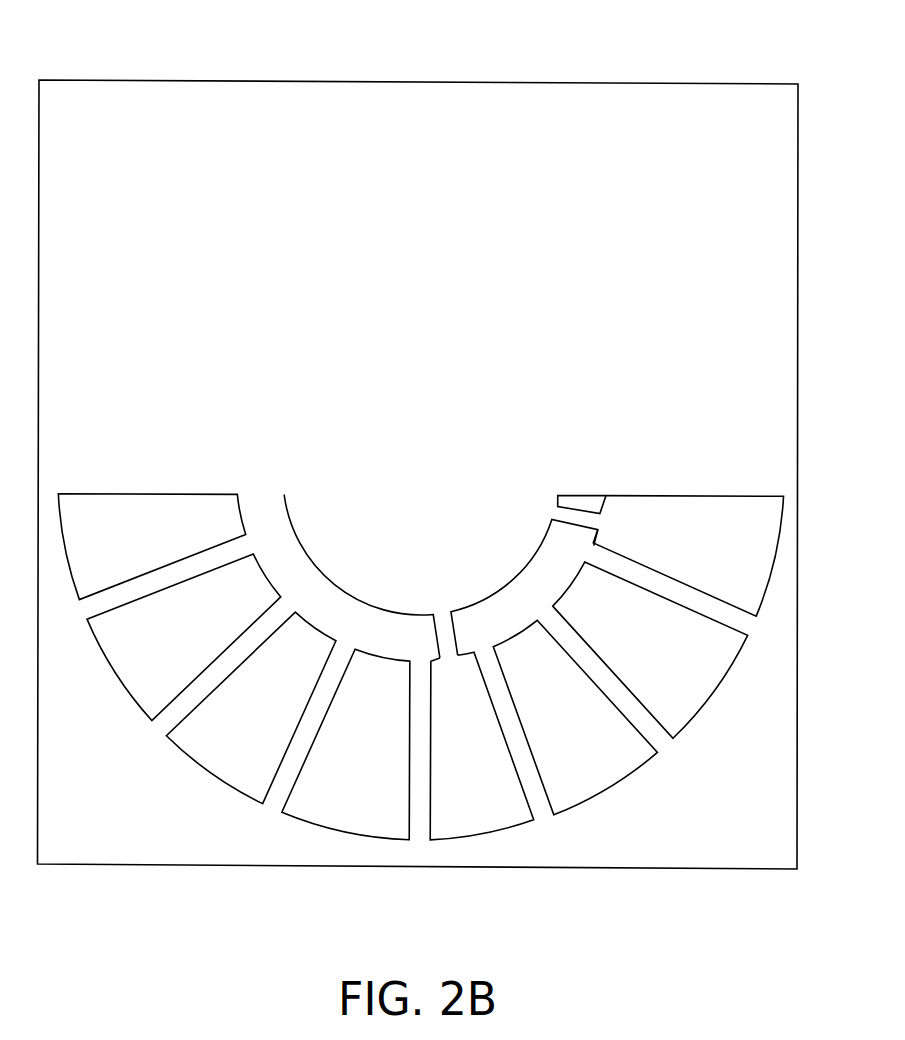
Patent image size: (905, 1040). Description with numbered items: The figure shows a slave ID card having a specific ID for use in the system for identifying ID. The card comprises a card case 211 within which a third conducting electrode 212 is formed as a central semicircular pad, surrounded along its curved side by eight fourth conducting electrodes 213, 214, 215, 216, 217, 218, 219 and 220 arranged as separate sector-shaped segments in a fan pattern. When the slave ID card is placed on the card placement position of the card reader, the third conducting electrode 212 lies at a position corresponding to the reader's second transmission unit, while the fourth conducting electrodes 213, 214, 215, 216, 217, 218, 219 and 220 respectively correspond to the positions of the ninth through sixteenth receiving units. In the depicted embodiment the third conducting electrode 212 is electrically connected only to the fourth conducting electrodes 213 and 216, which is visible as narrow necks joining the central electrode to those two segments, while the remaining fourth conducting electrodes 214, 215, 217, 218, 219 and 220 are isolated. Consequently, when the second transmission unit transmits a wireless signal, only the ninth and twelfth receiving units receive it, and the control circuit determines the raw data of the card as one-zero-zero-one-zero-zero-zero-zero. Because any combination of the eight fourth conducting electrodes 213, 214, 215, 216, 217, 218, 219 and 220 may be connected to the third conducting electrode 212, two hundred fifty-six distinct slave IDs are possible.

The card case 211 is at (418, 81).
The third conducting electrode 212 is at (445, 577).
The fourth conducting electrode 213 is at (688, 556).
The fourth conducting electrode 214 is at (650, 650).
The fourth conducting electrode 215 is at (575, 717).
The fourth conducting electrode 216 is at (482, 746).
The fourth conducting electrode 217 is at (346, 744).
The fourth conducting electrode 218 is at (251, 708).
The fourth conducting electrode 219 is at (184, 637).
The fourth conducting electrode 220 is at (152, 547).